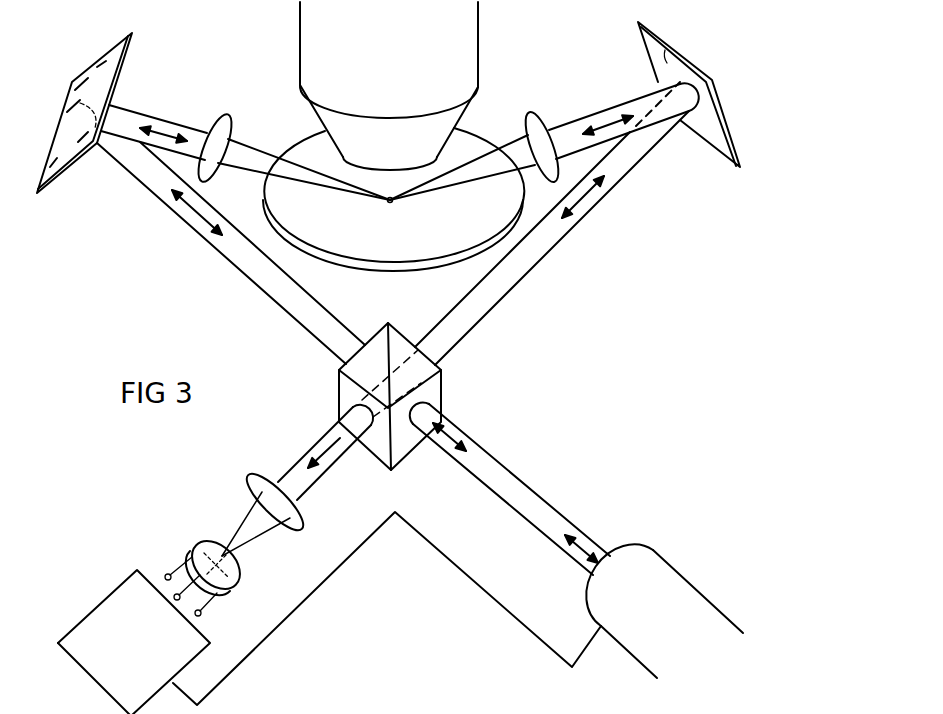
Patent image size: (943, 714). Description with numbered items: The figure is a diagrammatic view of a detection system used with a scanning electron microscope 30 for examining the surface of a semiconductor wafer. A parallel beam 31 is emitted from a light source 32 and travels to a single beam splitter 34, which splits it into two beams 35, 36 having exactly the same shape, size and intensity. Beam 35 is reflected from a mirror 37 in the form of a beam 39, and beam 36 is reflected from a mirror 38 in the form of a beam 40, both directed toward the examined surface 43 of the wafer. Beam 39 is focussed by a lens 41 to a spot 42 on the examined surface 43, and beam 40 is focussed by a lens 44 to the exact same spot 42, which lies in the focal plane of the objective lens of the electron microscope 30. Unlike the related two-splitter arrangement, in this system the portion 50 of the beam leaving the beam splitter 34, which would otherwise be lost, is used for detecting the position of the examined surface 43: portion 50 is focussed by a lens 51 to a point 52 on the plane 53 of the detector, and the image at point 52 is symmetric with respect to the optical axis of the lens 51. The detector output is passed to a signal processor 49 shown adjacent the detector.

The scanning electron microscope 30 is at (465, 40).
The parallel beam 31 is at (528, 485).
The light source 32 is at (663, 572).
The beam splitter 34 is at (395, 405).
The beam 35 is at (517, 277).
The beam 36 is at (233, 262).
The mirror 37 is at (667, 52).
The mirror 38 is at (121, 57).
The beam 39 is at (583, 118).
The beam 40 is at (172, 116).
The lens 41 is at (528, 116).
The spot 42 is at (390, 204).
The examined surface 43 is at (412, 253).
The lens 44 is at (219, 115).
The signal processor 49 is at (108, 597).
The beam portion 50 is at (316, 480).
The lens 51 is at (251, 492).
The point 52 is at (187, 552).
The detector plane 53 is at (222, 566).